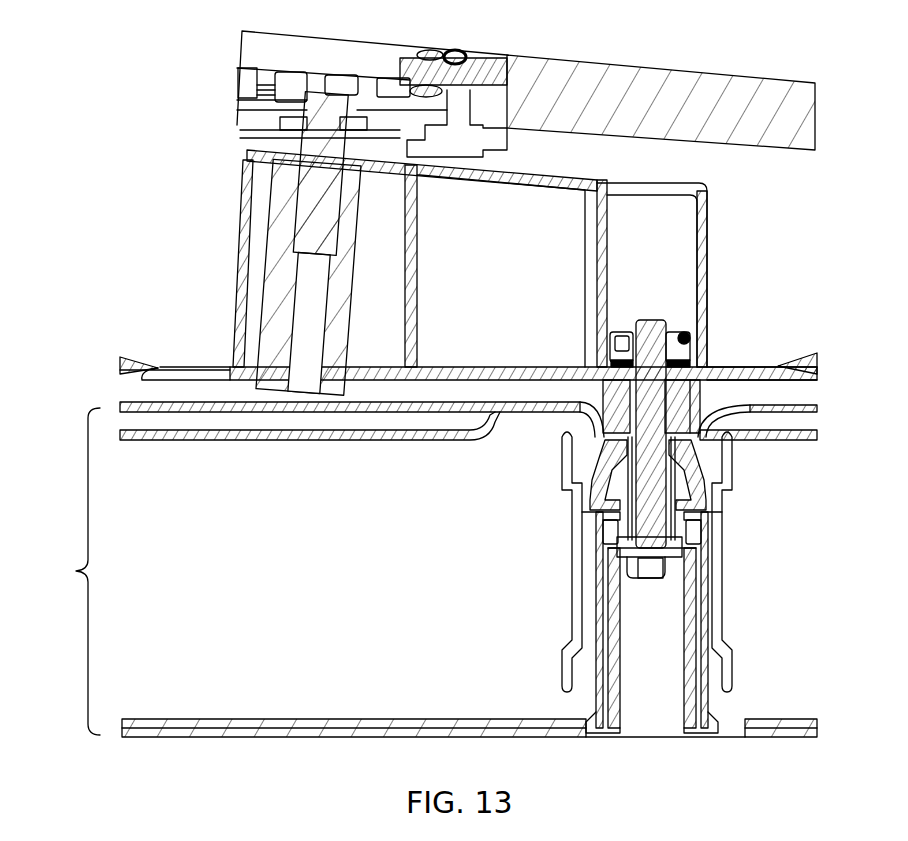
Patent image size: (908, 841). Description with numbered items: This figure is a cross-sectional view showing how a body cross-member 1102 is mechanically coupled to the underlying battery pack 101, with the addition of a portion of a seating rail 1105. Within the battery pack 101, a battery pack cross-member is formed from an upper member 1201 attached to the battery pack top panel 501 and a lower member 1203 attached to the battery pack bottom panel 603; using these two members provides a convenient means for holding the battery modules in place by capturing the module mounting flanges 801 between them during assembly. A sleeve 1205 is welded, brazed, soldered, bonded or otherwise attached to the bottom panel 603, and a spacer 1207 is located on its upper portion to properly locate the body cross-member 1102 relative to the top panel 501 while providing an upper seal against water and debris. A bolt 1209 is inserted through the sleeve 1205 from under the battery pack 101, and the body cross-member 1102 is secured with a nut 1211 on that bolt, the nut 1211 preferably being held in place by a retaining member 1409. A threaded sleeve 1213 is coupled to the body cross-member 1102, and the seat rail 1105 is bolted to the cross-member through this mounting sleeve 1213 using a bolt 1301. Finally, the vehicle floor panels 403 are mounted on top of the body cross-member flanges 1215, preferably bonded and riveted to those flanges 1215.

The seating rail 1105 is at (568, 80).
The body cross-member 1102 is at (455, 172).
The threaded sleeve 1213 is at (280, 253).
The bolt 1301 is at (313, 177).
The vehicle floor panel 403 is at (170, 367).
The battery pack top panel 501 is at (767, 408).
The body cross-member flanges 1215 is at (756, 382).
The spacer 1207 is at (690, 405).
The retaining member 1409 is at (622, 332).
The nut 1211 is at (680, 332).
The upper member 1201 is at (693, 487).
The bolt 1209 is at (648, 477).
The lower member 1203 is at (703, 653).
The sleeve 1205 is at (685, 617).
The module mounting flanges 801 is at (600, 512).
The battery pack bottom panel 603 is at (730, 740).
The battery pack 101 is at (64, 571).